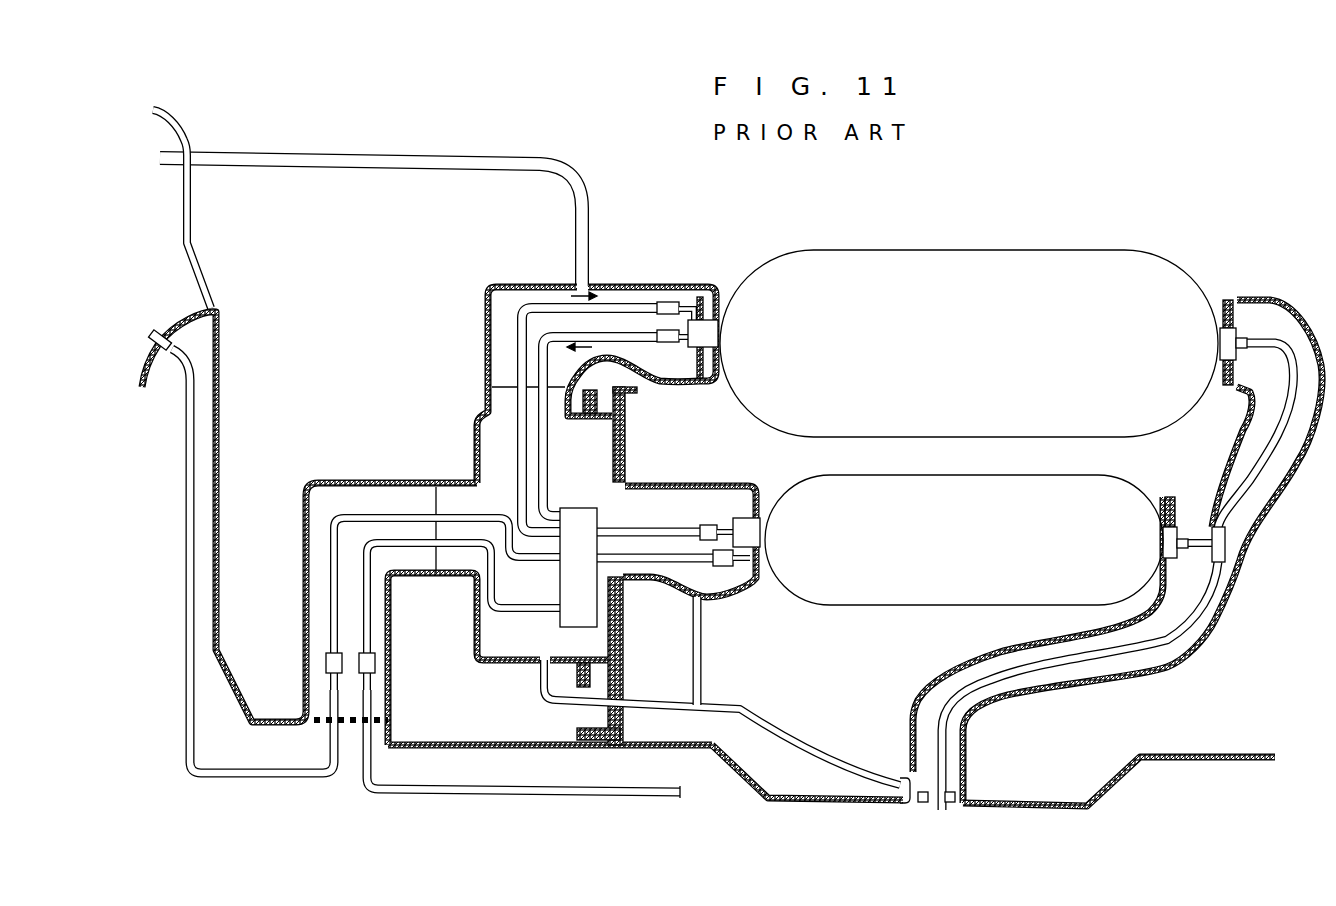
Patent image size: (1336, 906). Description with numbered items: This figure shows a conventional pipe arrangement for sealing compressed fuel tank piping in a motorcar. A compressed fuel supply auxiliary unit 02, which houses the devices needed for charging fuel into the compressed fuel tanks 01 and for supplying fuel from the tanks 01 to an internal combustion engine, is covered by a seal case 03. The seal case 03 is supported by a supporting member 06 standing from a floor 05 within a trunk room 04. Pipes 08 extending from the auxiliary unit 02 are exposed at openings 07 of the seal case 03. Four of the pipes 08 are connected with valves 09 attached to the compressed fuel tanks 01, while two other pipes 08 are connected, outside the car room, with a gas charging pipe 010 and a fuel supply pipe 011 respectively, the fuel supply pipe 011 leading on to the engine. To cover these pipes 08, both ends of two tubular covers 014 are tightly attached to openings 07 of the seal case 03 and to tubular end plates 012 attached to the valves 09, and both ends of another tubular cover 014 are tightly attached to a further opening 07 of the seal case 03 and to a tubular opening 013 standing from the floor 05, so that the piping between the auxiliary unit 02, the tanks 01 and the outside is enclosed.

The compressed fuel tank 01 is at (1000, 268).
The compressed fuel supply auxiliary unit 02 is at (575, 520).
The seal case 03 is at (475, 437).
The trunk room 04 is at (853, 680).
The floor 05 is at (728, 762).
The supporting member 06 is at (623, 640).
The opening 07 is at (493, 385).
The pipe 08 is at (633, 335).
The valve 09 is at (708, 330).
The gas charging pipe 010 is at (324, 786).
The fuel supply pipe 011 is at (470, 790).
The tubular end plate 012 is at (690, 288).
The tubular opening 013 is at (392, 706).
The tubular cover 014 is at (500, 285).